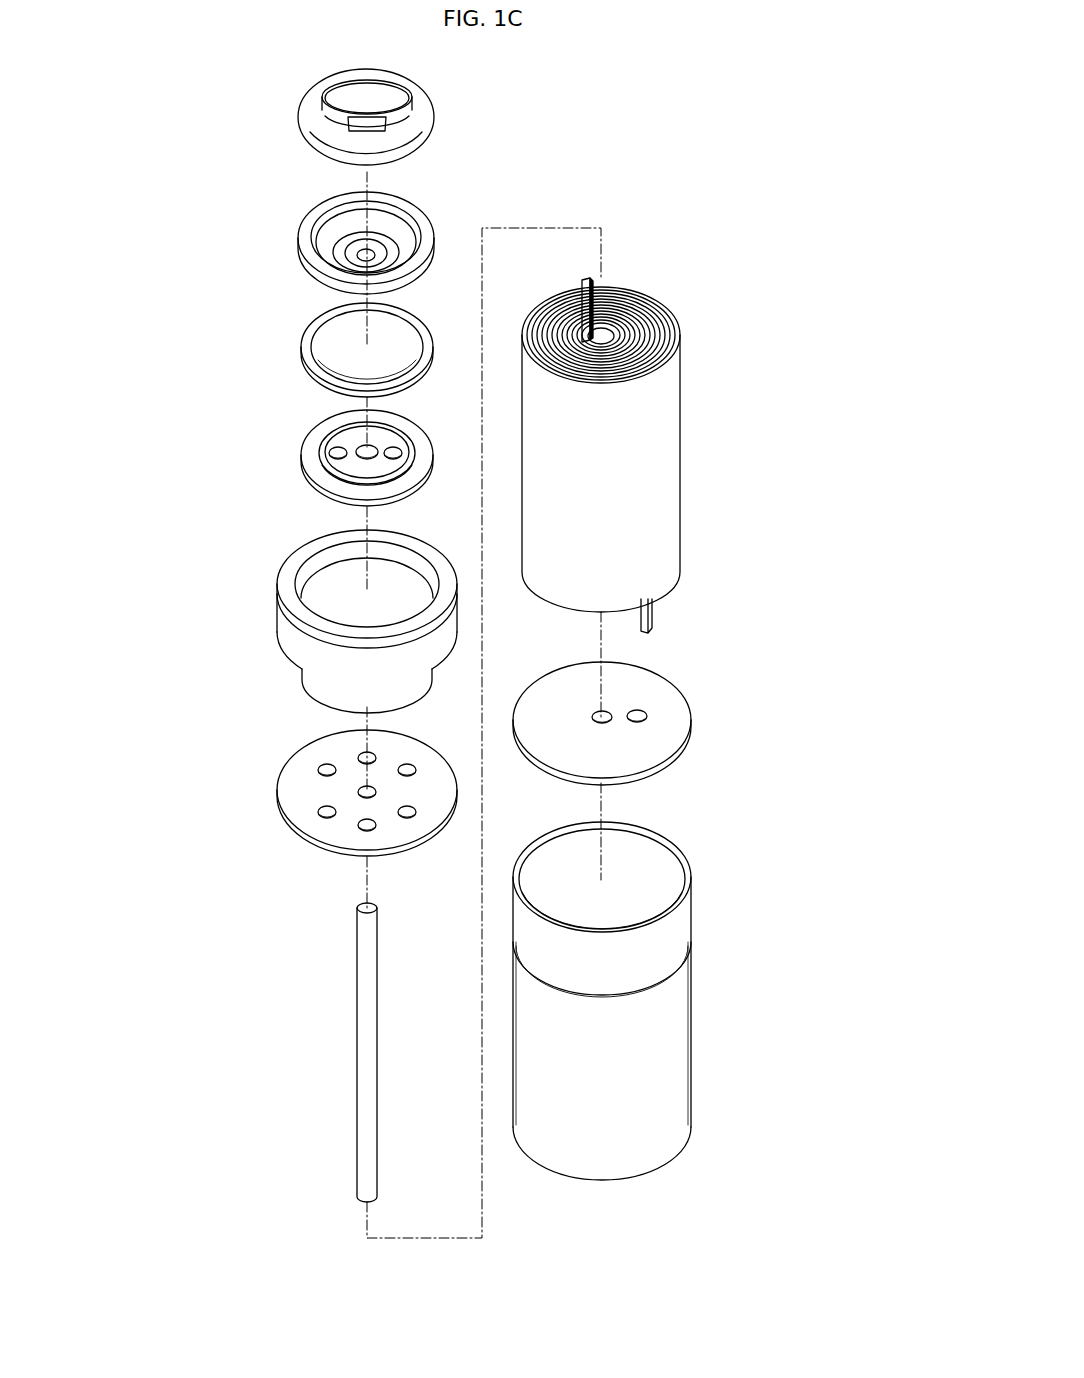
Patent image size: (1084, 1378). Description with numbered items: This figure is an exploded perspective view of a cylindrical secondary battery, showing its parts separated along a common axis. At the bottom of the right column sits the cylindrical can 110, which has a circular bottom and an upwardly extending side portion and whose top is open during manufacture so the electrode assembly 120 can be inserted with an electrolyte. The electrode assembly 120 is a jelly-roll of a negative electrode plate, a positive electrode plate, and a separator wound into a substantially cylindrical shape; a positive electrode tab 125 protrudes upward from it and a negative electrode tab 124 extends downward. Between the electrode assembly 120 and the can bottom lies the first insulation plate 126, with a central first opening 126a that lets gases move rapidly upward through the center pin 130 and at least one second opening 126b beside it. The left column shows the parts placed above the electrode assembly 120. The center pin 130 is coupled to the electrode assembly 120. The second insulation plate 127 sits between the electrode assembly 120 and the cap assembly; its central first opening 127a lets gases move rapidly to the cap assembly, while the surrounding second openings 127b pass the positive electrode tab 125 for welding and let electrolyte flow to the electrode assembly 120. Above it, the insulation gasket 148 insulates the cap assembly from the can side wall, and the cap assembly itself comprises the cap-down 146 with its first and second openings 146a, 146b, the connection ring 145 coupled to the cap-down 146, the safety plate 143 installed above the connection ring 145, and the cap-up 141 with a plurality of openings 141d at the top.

The cap-up 141 is at (342, 125).
The openings 141d is at (357, 131).
The safety plate 143 is at (305, 236).
The connection ring 145 is at (322, 350).
The cap-down 146 is at (323, 453).
The first opening 146a is at (360, 447).
The second opening 146b is at (338, 448).
The insulation gasket 148 is at (282, 620).
The second insulation plate 127 is at (324, 784).
The first opening 127a is at (358, 789).
The second openings 127b is at (327, 766).
The center pin 130 is at (360, 1043).
The electrode assembly 120 is at (638, 435).
The positive electrode tab 125 is at (583, 282).
The negative electrode tab 124 is at (650, 608).
The first insulation plate 126 is at (648, 734).
The first opening 126a is at (608, 712).
The second opening 126b is at (643, 708).
The cylindrical can 110 is at (694, 1037).